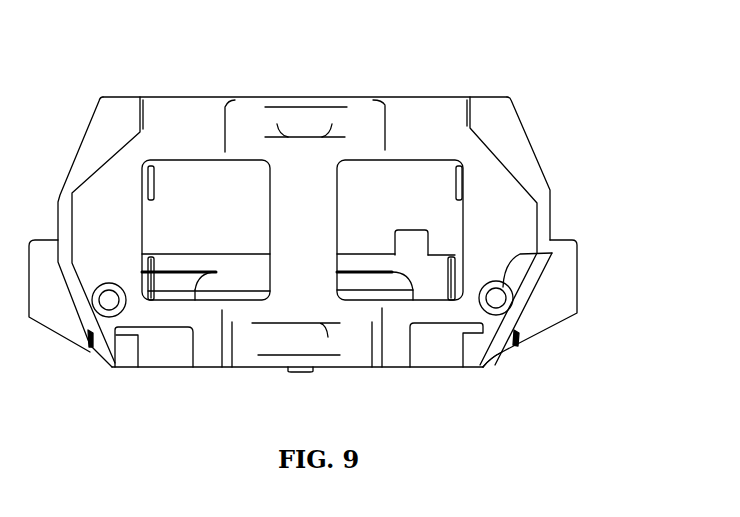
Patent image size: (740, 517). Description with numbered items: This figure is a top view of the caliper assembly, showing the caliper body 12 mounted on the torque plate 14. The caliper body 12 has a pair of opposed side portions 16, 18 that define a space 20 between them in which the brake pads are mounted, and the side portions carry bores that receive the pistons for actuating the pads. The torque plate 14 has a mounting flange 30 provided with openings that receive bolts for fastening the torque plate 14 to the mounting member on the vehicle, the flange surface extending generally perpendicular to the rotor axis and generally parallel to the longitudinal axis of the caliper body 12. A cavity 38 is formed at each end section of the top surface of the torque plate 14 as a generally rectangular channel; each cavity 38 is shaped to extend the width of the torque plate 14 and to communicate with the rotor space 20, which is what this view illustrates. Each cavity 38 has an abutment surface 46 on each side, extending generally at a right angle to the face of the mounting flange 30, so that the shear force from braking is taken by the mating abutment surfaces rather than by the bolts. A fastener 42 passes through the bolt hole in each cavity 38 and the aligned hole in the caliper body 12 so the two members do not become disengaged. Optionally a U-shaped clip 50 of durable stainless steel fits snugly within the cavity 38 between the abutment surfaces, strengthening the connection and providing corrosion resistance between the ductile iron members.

The caliper body 12 is at (529, 142).
The torque plate 14 is at (579, 276).
The side portion 16 is at (210, 368).
The side portion 18 is at (180, 97).
The space 20 is at (460, 222).
The mounting flange 30 is at (212, 254).
The cavity 38 is at (498, 351).
The fastener 42 is at (567, 240).
The abutment surface 46 is at (146, 275).
The clip 50 is at (522, 339).